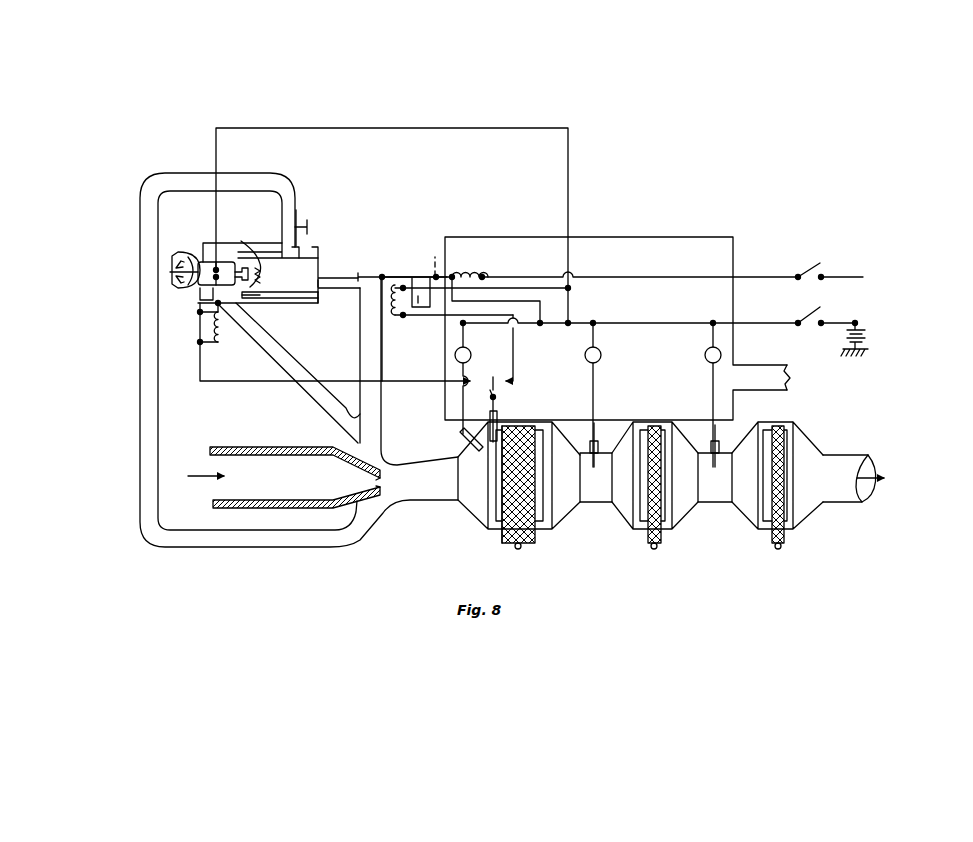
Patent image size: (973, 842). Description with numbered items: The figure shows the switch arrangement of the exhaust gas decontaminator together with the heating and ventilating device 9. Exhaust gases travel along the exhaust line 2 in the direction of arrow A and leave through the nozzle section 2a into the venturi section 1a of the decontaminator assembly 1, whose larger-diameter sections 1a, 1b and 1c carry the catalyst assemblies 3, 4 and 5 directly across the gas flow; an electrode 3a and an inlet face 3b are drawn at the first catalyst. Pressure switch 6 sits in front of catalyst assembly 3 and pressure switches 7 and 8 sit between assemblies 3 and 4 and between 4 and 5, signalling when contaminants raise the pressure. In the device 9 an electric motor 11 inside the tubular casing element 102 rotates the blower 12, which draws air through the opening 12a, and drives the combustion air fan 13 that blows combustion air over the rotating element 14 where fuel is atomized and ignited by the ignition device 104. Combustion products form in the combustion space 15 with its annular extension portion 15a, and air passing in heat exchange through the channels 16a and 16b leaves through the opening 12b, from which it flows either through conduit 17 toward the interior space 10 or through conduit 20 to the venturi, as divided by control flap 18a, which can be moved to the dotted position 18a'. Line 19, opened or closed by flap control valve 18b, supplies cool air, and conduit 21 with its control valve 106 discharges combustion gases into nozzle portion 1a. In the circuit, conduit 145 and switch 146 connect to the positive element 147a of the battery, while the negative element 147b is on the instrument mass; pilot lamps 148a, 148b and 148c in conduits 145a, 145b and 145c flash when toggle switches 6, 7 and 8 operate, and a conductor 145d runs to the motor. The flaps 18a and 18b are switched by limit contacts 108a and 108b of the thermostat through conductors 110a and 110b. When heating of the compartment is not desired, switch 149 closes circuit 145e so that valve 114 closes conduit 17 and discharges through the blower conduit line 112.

The decontaminator assembly 1 is at (677, 543).
The venturi section 1a is at (545, 505).
The conduit section 1b is at (665, 508).
The conduit section 1c is at (790, 508).
The exhaust line 2 is at (257, 509).
The nozzle section 2a is at (370, 498).
The catalyst assembly 3 is at (502, 537).
The ignition electrode 3a is at (520, 425).
The catalyst inlet face 3b is at (502, 500).
The catalyst assembly 4 is at (650, 537).
The catalyst assembly 5 is at (773, 537).
The pressure switch 6 is at (461, 439).
The pressure switch 7 is at (597, 435).
The pressure switch 8 is at (718, 433).
The heating and ventilating device 9 is at (320, 233).
The interior space 10 is at (593, 237).
The electric motor 11 is at (205, 266).
The blower 12 is at (192, 290).
The opening 12a is at (170, 272).
The opening 12b is at (320, 281).
The combustion air fan 13 is at (260, 238).
The rotating element 14 is at (243, 265).
The combustion space 15 is at (320, 270).
The annular extension portion 15a is at (300, 299).
The channel 16a is at (258, 300).
The channel 16b is at (319, 302).
The conduit 17 is at (417, 270).
The control flap 18a is at (401, 306).
The control flap dotted line position 18a' is at (409, 244).
The flap control valve 18b is at (218, 304).
The line 19 is at (317, 397).
The conduit 20 is at (382, 400).
The conduit 21 is at (142, 497).
The arrow A is at (196, 471).
The tubular casing element 102 is at (181, 249).
The ignition device 104 is at (262, 270).
The control valve 106 is at (308, 219).
The limit contact 108a is at (506, 380).
The limit contact 108b is at (475, 380).
The conductor 110a is at (515, 353).
The conductor 110b is at (245, 385).
The blower conduit line 112 is at (418, 306).
The valve 114 is at (436, 257).
The conduit 145 is at (777, 325).
The conduit 145a is at (712, 373).
The conduit 145b is at (592, 373).
The conduit 145c is at (463, 402).
The conductor 145d is at (569, 147).
The circuit 145e is at (677, 275).
The switch 146 is at (809, 316).
The positive element 147a is at (897, 325).
The negative element 147b is at (872, 357).
The pilot lamp 148a is at (705, 352).
The pilot lamp 148b is at (602, 357).
The pilot lamp 148c is at (487, 349).
The switch 149 is at (812, 265).